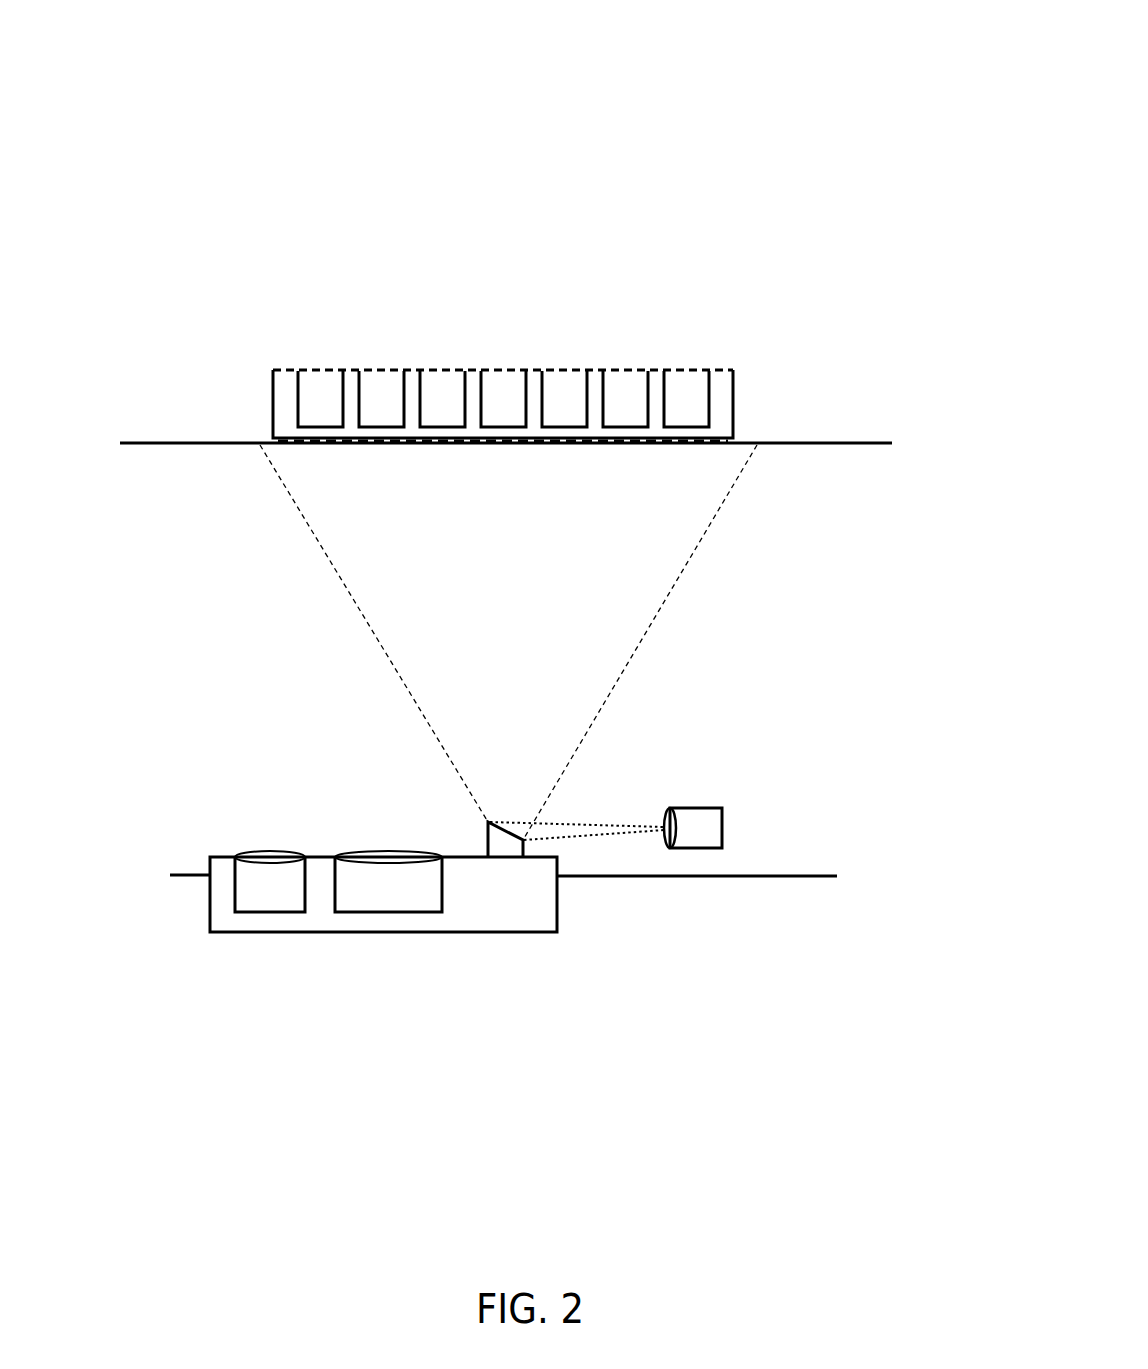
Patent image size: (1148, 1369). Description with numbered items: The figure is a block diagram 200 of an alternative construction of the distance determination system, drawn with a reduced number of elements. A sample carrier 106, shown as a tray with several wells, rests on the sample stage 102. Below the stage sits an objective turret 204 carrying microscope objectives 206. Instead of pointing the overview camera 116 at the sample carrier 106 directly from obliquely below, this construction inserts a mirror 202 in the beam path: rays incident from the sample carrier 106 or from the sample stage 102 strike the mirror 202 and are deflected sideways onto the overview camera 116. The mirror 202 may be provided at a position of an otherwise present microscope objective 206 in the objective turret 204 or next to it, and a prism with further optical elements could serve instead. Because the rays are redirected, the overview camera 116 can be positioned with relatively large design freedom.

The block diagram 200 is at (283, 74).
The sample stage 102 is at (218, 436).
The sample carrier 106 is at (726, 367).
The mirror 202 is at (502, 843).
The objective turret 204 is at (558, 900).
The microscope objective 206 is at (260, 899).
The overview camera 116 is at (728, 820).